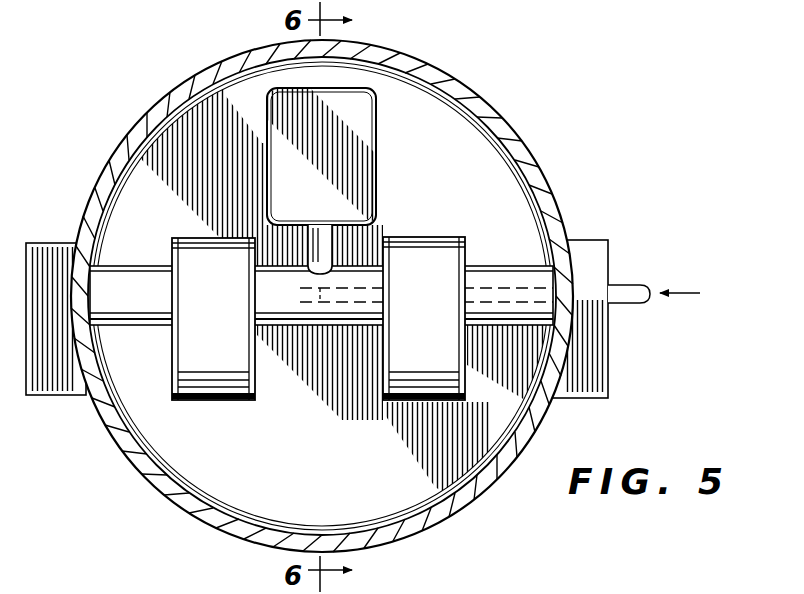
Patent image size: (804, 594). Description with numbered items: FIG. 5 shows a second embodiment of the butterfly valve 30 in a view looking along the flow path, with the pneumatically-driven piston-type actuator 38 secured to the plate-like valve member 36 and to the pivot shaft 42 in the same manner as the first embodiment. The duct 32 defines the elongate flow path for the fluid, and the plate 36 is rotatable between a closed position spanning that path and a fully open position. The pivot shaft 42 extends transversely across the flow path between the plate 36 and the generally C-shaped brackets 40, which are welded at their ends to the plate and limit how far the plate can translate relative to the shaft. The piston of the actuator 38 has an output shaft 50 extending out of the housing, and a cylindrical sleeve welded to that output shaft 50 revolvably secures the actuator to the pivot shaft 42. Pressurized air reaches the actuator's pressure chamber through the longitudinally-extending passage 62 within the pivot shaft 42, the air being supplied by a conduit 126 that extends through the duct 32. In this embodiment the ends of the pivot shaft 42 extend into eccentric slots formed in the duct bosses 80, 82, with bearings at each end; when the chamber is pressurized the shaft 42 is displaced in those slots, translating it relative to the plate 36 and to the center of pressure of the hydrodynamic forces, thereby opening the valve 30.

The butterfly valve 30 is at (309, 296).
The duct 32 is at (120, 448).
The plate-like valve member 36 is at (222, 473).
The pneumatically-driven piston-type actuator 38 is at (390, 183).
The C-shaped bracket 40 is at (235, 398).
The pivot shaft 42 is at (158, 266).
The output shaft 50 is at (322, 226).
The longitudinally-extending passage 62 is at (333, 325).
The duct boss 80 is at (62, 243).
The duct boss 82 is at (578, 397).
The conduit 126 is at (622, 284).